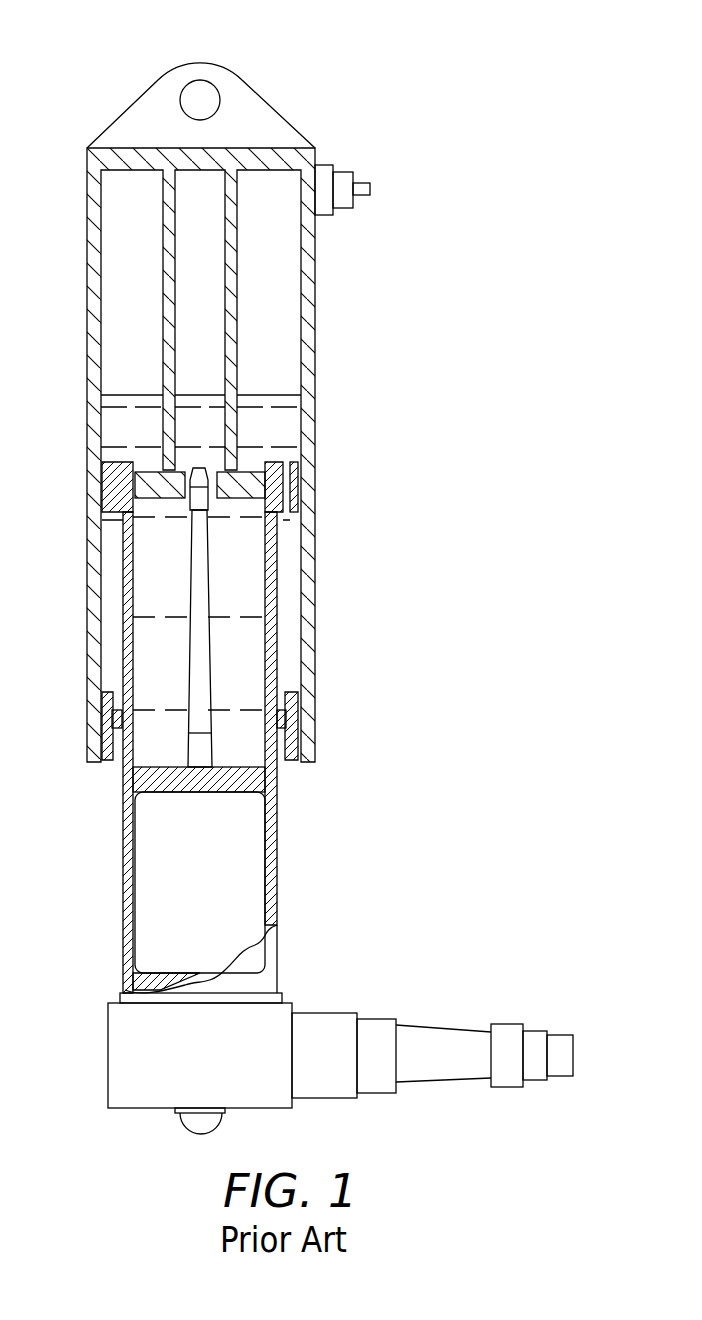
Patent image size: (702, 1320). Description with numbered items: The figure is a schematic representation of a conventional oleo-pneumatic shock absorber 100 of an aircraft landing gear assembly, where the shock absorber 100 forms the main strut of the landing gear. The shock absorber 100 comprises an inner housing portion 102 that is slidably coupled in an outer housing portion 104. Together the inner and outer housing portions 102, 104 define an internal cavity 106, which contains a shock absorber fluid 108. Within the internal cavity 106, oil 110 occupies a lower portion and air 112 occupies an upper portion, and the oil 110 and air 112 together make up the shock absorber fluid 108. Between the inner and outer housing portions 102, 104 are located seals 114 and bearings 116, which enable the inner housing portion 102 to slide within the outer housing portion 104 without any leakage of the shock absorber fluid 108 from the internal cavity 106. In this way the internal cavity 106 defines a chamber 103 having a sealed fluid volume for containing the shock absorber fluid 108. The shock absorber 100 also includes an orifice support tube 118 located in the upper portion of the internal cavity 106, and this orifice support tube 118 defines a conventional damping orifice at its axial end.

The oleo-pneumatic shock absorber 100 is at (118, 52).
The inner housing portion 102 is at (277, 838).
The chamber 103 is at (205, 283).
The outer housing portion 104 is at (87, 373).
The internal cavity 106 is at (245, 550).
The shock absorber fluid 108 is at (283, 395).
The oil 110 is at (245, 643).
The air 112 is at (278, 243).
The seals 114 is at (115, 701).
The bearings 116 is at (105, 484).
The orifice support tube 118 is at (140, 240).